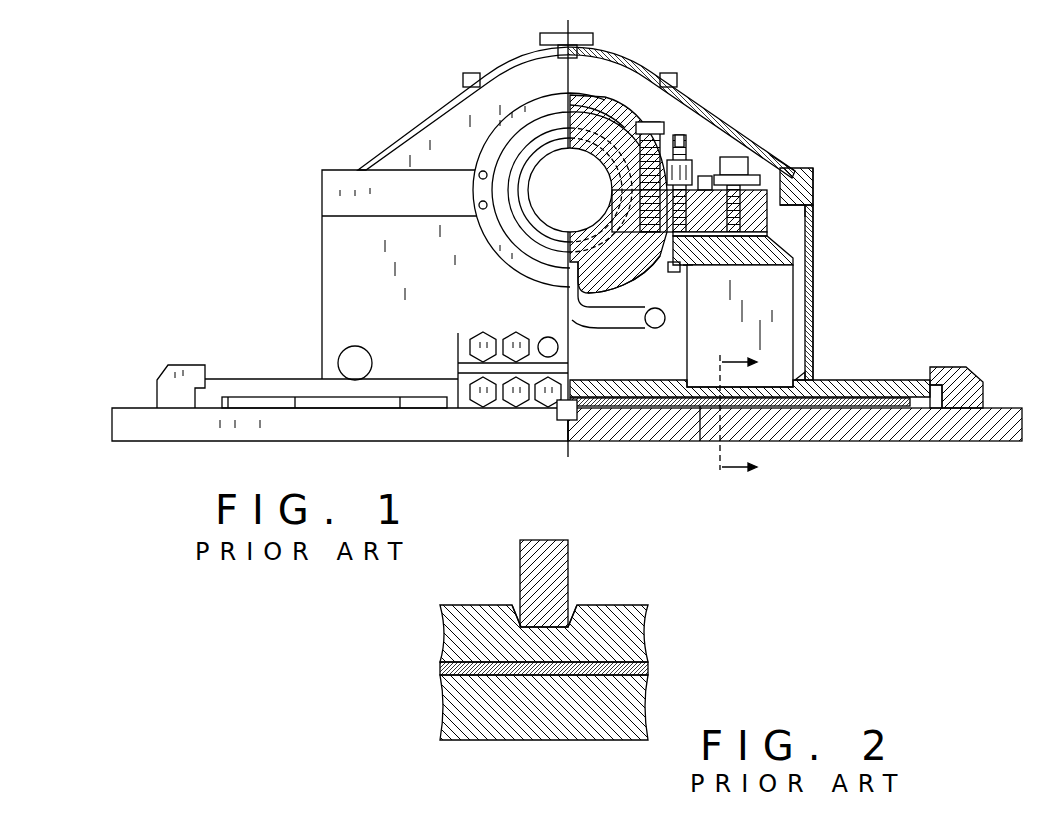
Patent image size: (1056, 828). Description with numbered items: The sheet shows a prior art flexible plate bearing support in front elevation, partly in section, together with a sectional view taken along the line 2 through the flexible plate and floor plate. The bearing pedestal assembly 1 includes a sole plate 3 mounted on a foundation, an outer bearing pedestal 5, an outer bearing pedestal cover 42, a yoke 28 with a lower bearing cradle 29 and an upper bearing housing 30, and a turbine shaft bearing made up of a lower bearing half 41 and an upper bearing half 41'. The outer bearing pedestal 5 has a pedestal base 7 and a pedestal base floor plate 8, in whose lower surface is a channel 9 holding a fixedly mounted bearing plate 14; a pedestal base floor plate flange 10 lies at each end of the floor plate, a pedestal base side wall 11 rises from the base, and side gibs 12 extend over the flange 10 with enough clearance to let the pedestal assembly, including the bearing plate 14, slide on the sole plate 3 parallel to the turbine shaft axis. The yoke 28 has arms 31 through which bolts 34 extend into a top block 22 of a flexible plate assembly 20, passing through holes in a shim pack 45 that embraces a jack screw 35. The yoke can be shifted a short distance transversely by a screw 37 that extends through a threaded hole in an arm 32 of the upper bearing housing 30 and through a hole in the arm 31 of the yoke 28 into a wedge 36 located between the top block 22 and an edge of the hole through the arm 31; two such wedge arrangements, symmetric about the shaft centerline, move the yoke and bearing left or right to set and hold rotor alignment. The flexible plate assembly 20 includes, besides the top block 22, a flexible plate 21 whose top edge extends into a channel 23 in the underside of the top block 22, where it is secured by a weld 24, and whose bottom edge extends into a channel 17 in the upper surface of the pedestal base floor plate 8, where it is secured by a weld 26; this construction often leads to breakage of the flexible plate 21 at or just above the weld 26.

In FIG. 1, the bearing pedestal assembly 1 is at (814, 108).
In FIG. 1, the section line 2- 2 is at (746, 414).
In FIG. 1, the sole plate 3 is at (860, 441).
In FIG. 1, the outer bearing pedestal 5 is at (830, 222).
In FIG. 1, the pedestal base 7 is at (822, 290).
In FIG. 1, the pedestal base floor plate 8 is at (612, 380).
In FIG. 2, the pedestal base floor plate 8 is at (625, 604).
In FIG. 1, the channel 9 is at (700, 441).
In FIG. 1, the pedestal base floor plate flange 10 is at (918, 408).
In FIG. 1, the pedestal base side wall 11 is at (822, 218).
In FIG. 1, the side gib 12 is at (976, 375).
In FIG. 1, the bearing plate 14 is at (836, 406).
In FIG. 2, the channel 17 is at (576, 604).
In FIG. 1, the flexible plate assembly 20 is at (676, 338).
In FIG. 1, the flexible plate 21 is at (722, 350).
In FIG. 2, the flexible plate 21 is at (556, 548).
In FIG. 1, the top block 22 is at (740, 256).
In FIG. 1, the channel 23 is at (670, 266).
In FIG. 1, the weld 24 is at (690, 262).
In FIG. 2, the weld 26 is at (515, 604).
In FIG. 1, the yoke 28 is at (800, 185).
In FIG. 1, the lower bearing cradle 29 is at (583, 307).
In FIG. 1, the upper bearing housing 30 is at (617, 103).
In FIG. 1, the arm 31 is at (712, 190).
In FIG. 1, the arm 32 is at (697, 170).
In FIG. 1, the bolt 34 is at (782, 168).
In FIG. 1, the jack screw 35 is at (752, 175).
In FIG. 1, the wedge 36 is at (636, 258).
In FIG. 1, the screw 37 is at (686, 140).
In FIG. 1, the lower bearing half 41 is at (539, 191).
In FIG. 1, the upper bearing half 41' is at (605, 69).
In FIG. 1, the outer bearing pedestal cover 42 is at (447, 102).
In FIG. 1, the shim pack 45 is at (786, 240).